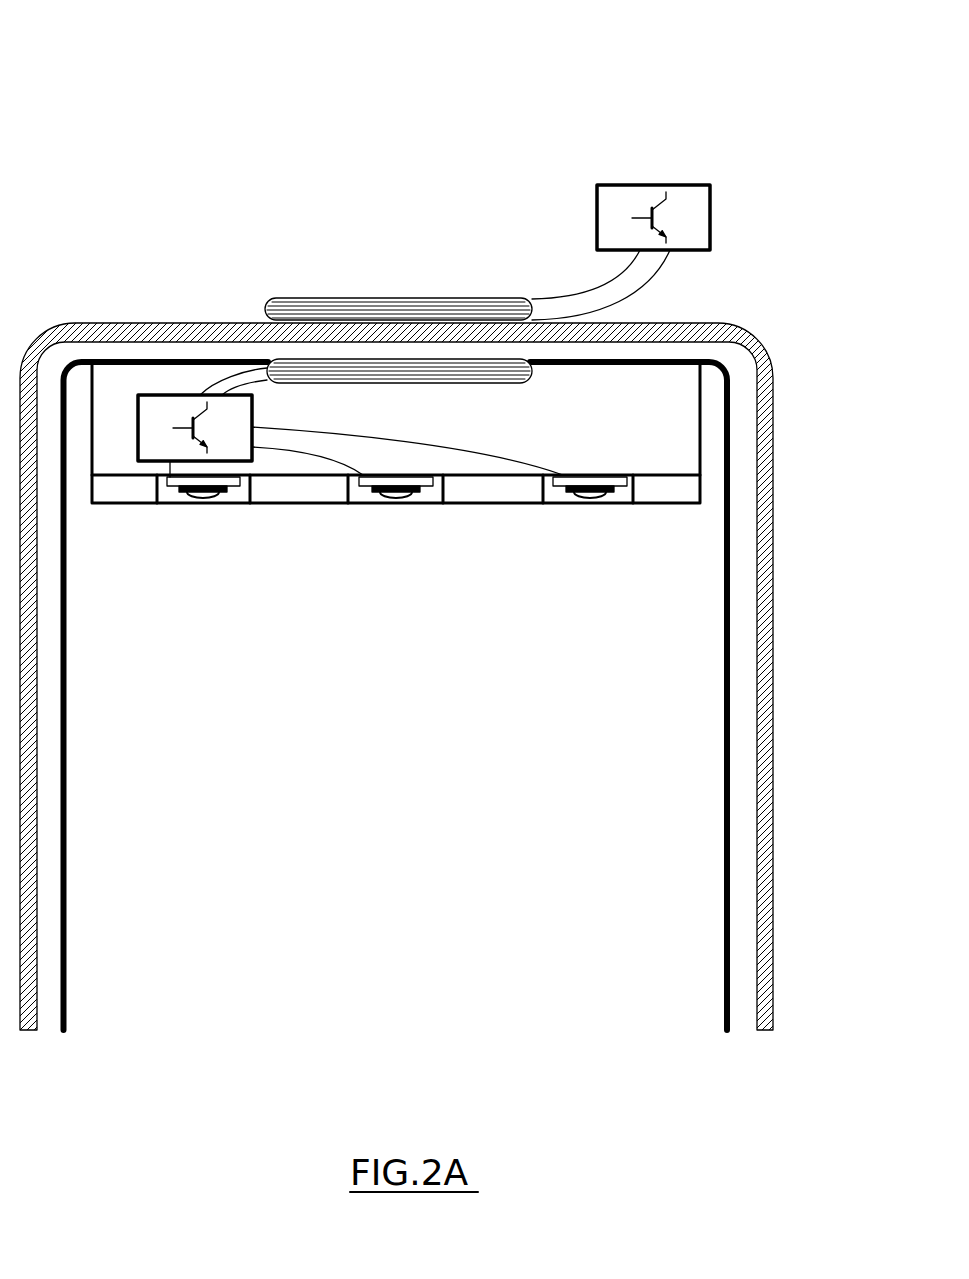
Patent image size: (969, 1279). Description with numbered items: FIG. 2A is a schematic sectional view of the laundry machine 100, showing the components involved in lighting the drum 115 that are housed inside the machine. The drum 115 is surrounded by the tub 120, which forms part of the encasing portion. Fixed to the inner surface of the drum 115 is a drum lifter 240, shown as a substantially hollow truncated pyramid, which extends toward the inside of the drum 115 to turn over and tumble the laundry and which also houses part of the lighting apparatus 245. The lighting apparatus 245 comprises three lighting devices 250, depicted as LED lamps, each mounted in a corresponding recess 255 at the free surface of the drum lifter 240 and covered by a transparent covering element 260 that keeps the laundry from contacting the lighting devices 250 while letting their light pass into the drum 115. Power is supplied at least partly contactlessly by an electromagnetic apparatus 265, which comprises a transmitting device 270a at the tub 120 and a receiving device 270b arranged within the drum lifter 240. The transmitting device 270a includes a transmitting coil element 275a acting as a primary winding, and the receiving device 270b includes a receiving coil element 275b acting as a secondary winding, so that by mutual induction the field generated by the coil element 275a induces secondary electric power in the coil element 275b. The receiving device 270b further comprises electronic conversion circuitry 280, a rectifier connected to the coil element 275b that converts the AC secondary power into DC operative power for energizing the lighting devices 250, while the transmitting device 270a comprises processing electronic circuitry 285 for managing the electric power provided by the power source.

The laundry machine 100 is at (98, 100).
The drum 115 is at (65, 995).
The tub 120 is at (677, 322).
The drum lifter 240 is at (170, 378).
The lighting apparatus 245 is at (570, 123).
The lighting device 250 is at (180, 498).
The recess 255 is at (242, 493).
The covering element 260 is at (195, 498).
The electromagnetic apparatus 265 is at (247, 316).
The transmitting device 270a is at (468, 300).
The receiving device 270b is at (533, 376).
The transmitting coil element 275a is at (375, 300).
The receiving coil element 275b is at (342, 383).
The electronic conversion circuitry 280 is at (163, 395).
The processing electronic circuitry 285 is at (607, 185).